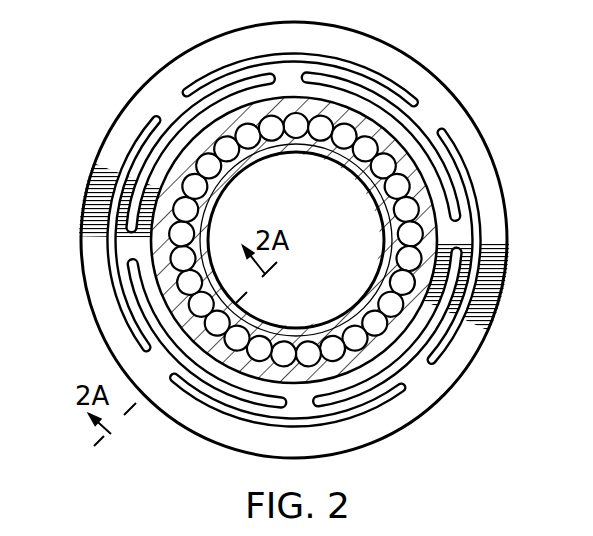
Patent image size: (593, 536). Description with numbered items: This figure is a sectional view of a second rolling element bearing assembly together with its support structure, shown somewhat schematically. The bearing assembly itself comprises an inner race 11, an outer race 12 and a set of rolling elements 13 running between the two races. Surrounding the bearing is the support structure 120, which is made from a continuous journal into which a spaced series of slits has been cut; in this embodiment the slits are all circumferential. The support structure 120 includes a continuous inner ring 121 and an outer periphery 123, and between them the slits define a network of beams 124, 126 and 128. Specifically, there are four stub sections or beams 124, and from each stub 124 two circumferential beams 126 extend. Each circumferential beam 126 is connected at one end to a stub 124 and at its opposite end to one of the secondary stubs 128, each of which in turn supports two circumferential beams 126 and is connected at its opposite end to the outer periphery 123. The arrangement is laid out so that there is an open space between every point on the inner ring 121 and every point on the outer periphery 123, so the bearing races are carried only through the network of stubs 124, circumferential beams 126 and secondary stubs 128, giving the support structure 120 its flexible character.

The inner race 11 is at (388, 235).
The outer race 12 is at (214, 203).
The rolling elements 13 is at (382, 163).
The support structure 120 is at (455, 396).
The continuous inner ring 121 is at (443, 108).
The outer periphery 123 is at (395, 67).
The stub sections or beams 124 is at (112, 272).
The circumferential beams 126 is at (152, 135).
The stubs 128 is at (172, 103).